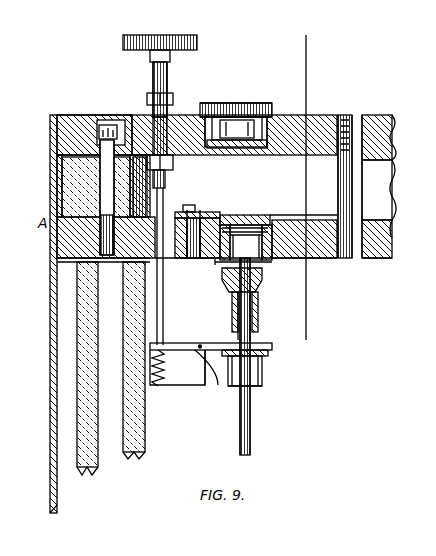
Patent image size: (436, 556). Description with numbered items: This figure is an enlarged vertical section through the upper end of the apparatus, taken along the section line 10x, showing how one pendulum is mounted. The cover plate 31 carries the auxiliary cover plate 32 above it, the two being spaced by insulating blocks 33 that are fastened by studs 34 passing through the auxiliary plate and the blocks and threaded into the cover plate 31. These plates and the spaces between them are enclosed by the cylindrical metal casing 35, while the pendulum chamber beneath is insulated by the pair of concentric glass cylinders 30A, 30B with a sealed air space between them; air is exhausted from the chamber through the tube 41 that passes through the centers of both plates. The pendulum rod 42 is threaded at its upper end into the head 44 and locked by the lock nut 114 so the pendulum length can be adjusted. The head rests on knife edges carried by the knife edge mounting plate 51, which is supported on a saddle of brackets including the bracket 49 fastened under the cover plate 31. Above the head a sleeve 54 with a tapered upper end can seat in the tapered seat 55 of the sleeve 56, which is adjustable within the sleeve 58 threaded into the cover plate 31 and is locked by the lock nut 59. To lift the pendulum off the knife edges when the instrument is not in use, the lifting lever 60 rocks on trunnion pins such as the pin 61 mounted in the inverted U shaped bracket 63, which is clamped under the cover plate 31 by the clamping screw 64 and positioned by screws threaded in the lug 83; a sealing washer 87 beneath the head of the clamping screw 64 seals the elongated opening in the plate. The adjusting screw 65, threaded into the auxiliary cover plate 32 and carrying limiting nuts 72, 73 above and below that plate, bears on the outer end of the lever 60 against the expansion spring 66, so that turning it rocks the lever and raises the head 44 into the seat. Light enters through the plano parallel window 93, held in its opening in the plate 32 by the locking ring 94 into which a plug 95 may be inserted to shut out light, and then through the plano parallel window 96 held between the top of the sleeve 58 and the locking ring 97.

The section line 10x is at (299, 185).
The glass cylinder 30A is at (94, 487).
The glass cylinder 30B is at (136, 462).
The cover plate 31 is at (385, 236).
The auxiliary cover plate 32 is at (384, 116).
The insulating blocks 33 is at (75, 182).
The studs 34 is at (54, 150).
The cylindrical metal casing 35 is at (50, 342).
The tube 41 is at (366, 187).
The rod 42 is at (250, 420).
The head 44 is at (258, 310).
The bracket 49 is at (262, 386).
The knife edge mounting plate 51 is at (262, 372).
The sleeve 54 is at (260, 286).
The tapered seat 55 is at (240, 250).
The sleeve 56 is at (272, 235).
The sleeve 58 is at (300, 235).
The lock nut 59 is at (270, 268).
The lifting lever 60 is at (168, 342).
The trunnion pin 61 is at (200, 356).
The inverted U shaped bracket 63 is at (195, 380).
The clamping screw 64 is at (214, 214).
The adjusting screw 65 is at (156, 232).
The expansion spring 66 is at (164, 385).
The nut 72 is at (148, 97).
The nut 73 is at (112, 125).
The lug 83 is at (120, 264).
The sealing washer 87 is at (208, 210).
The plano parallel window 93 is at (240, 125).
The locking ring 94 is at (287, 117).
The plug 95 is at (272, 113).
The plano parallel window 96 is at (302, 190).
The locking ring 97 is at (250, 226).
The lock nut 114 is at (258, 298).